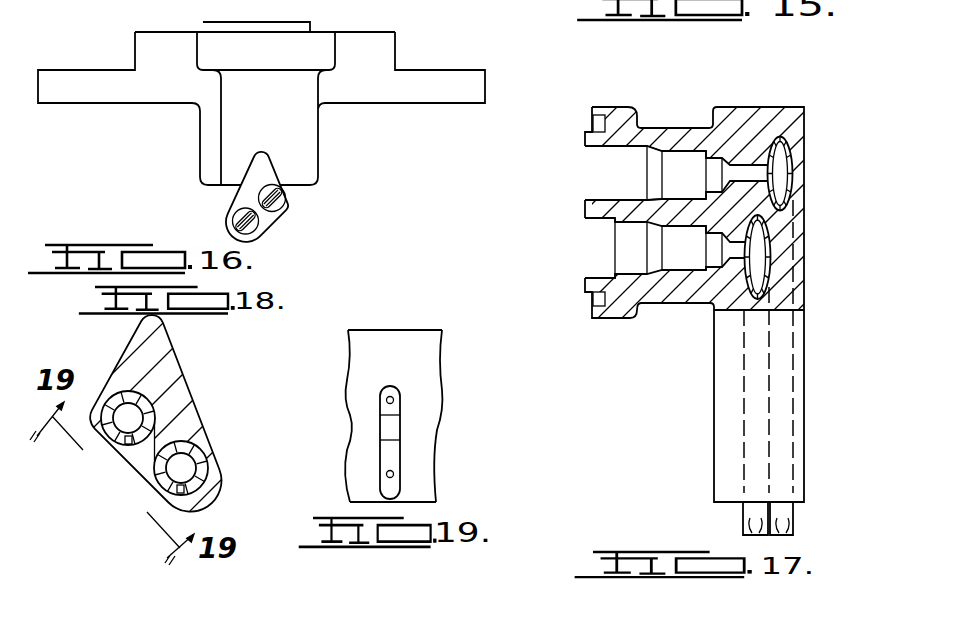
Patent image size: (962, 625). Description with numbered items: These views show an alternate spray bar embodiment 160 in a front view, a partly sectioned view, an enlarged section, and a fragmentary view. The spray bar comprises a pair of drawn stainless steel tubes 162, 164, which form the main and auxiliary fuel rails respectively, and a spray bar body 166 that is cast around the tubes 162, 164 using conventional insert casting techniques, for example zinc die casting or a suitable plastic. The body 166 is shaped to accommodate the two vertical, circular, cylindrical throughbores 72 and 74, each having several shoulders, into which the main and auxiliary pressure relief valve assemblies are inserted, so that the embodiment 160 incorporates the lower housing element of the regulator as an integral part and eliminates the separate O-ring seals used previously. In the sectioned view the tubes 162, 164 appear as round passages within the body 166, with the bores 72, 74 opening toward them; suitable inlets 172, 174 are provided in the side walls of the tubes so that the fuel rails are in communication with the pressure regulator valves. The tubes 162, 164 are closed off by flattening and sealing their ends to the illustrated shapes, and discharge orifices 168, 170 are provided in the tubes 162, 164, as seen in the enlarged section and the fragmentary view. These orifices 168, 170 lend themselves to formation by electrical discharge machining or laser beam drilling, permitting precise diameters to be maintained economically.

In FIG. 16, the alternate spray bar embodiment 160 is at (318, 150).
In FIG. 18, the alternate spray bar embodiment 160 is at (139, 333).
In FIG. 19, the alternate spray bar embodiment 160 is at (418, 333).
In FIG. 17, the alternate spray bar embodiment 160 is at (755, 110).
In FIG. 16, the drawn stainless steel tube 162 is at (256, 231).
In FIG. 18, the drawn stainless steel tube 162 is at (205, 460).
In FIG. 19, the drawn stainless steel tube 162 is at (386, 469).
In FIG. 16, the drawn stainless steel tube 164 is at (279, 196).
In FIG. 18, the drawn stainless steel tube 164 is at (152, 408).
In FIG. 19, the drawn stainless steel tube 164 is at (385, 406).
In FIG. 17, the spray bar body 166 is at (672, 146).
In FIG. 18, the discharge orifice 168 is at (179, 492).
In FIG. 19, the discharge orifice 168 is at (394, 474).
In FIG. 18, the discharge orifice 170 is at (129, 437).
In FIG. 19, the discharge orifice 170 is at (393, 402).
In FIG. 17, the inlet 172 is at (772, 172).
In FIG. 17, the inlet 174 is at (750, 250).
In FIG. 17, the throughbore 72 is at (608, 149).
In FIG. 17, the throughbore 74 is at (630, 224).